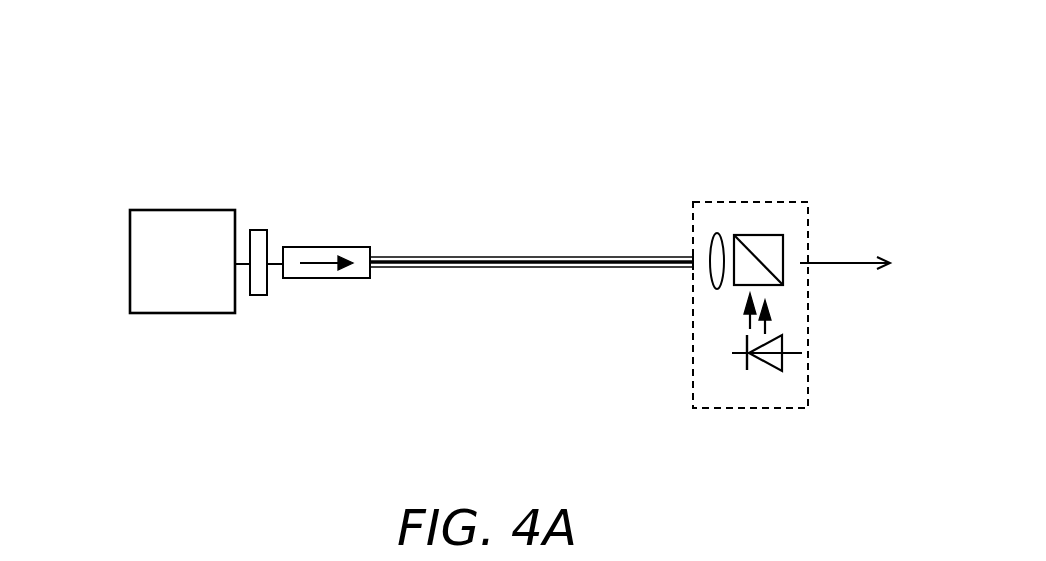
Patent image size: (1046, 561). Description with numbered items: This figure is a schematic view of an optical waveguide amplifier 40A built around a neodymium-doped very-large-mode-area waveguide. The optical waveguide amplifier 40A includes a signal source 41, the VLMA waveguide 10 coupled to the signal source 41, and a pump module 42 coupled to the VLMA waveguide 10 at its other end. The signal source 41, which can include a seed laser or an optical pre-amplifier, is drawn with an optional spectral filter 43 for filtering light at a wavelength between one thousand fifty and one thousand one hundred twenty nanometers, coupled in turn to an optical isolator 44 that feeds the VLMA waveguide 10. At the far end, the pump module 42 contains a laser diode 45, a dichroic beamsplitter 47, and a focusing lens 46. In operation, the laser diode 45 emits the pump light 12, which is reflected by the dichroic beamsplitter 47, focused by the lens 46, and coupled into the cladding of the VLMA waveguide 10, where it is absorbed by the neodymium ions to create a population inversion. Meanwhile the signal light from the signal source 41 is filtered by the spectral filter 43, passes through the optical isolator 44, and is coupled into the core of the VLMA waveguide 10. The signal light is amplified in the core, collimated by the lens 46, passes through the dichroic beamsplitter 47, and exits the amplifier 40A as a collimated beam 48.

The optical waveguide amplifier 40A is at (608, 78).
The signal source 41 is at (198, 284).
The spectral filter 43 is at (260, 229).
The optical isolator 44 is at (328, 247).
The VLMA waveguide 10 is at (507, 257).
The pump module 42 is at (763, 409).
The focusing lens 46 is at (718, 233).
The dichroic beamsplitter 47 is at (780, 235).
The collimated beam 48 is at (835, 262).
The pump light 12 is at (770, 320).
The laser diode 45 is at (731, 368).